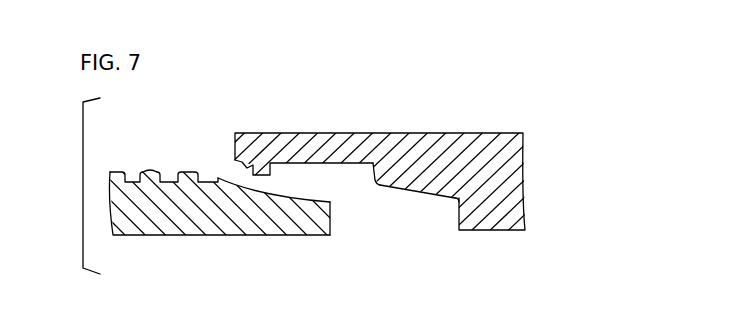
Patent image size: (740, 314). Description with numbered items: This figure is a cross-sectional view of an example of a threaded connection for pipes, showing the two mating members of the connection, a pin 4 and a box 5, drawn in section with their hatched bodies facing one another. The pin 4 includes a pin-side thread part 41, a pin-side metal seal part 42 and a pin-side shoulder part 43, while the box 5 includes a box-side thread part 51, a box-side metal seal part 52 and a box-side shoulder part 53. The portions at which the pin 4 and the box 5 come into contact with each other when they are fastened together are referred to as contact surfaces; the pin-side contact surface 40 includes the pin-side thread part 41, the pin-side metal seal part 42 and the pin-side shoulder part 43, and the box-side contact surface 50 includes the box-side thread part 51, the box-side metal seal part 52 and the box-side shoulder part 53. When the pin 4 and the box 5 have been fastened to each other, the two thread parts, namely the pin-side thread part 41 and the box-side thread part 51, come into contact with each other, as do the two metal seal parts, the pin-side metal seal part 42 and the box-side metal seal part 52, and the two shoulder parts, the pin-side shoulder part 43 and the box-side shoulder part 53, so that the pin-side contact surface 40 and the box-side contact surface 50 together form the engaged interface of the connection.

The pin 4 is at (197, 200).
The pin-side contact surface 40 is at (181, 155).
The pin-side thread part 41 is at (150, 172).
The pin-side metal seal part 42 is at (281, 194).
The pin-side shoulder part 43 is at (331, 223).
The box 5 is at (387, 166).
The box-side contact surface 50 is at (399, 206).
The box-side thread part 51 is at (243, 168).
The box-side metal seal part 52 is at (378, 186).
The box-side shoulder part 53 is at (456, 199).